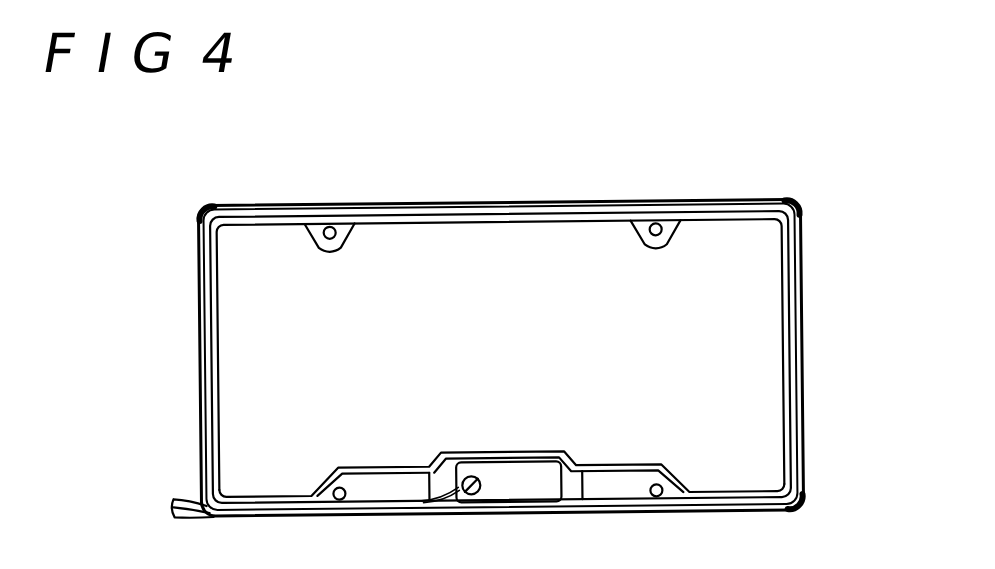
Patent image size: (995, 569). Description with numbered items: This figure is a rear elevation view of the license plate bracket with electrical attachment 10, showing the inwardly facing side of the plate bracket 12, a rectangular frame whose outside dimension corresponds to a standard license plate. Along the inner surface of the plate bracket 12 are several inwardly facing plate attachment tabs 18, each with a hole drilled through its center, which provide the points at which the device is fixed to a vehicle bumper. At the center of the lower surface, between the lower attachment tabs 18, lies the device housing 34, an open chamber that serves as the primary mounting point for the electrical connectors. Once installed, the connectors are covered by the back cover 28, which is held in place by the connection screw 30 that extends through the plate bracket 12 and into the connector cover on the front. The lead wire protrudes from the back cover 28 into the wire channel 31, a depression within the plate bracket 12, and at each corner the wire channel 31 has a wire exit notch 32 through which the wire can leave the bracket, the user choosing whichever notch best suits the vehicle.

The license plate bracket with electrical attachment 10 is at (355, 190).
The plate bracket 12 is at (479, 198).
The wire channel 31 is at (595, 210).
The wire exit notch 32 is at (791, 198).
The plate attachment tab 18 is at (325, 258).
The back cover 28 is at (537, 477).
The connection screw 30 is at (470, 474).
The device housing 34 is at (577, 453).